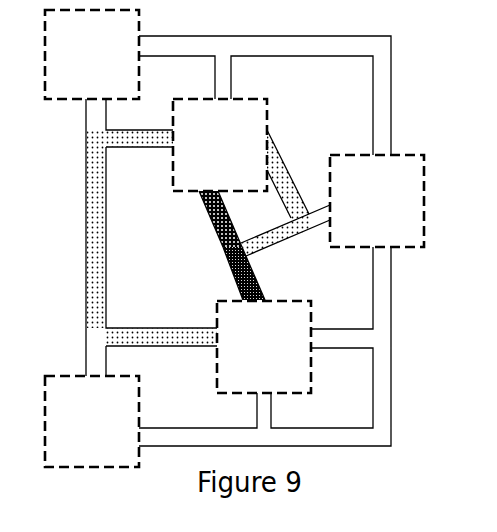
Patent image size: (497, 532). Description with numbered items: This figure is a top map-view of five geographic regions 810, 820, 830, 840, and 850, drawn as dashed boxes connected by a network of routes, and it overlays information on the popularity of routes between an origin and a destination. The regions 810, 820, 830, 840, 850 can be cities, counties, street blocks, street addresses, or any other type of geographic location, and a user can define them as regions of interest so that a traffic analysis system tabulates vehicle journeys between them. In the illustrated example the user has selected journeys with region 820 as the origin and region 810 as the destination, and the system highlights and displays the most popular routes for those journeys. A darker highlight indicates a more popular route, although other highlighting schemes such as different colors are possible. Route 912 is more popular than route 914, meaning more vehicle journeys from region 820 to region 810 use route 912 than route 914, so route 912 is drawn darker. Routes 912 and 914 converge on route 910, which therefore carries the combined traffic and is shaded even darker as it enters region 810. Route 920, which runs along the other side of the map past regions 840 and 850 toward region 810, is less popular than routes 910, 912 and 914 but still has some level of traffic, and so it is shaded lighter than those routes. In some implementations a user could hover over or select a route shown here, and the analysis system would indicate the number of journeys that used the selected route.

The geographic region 810 is at (264, 347).
The geographic region 820 is at (220, 145).
The geographic region 830 is at (377, 201).
The geographic region 840 is at (92, 54).
The geographic region 850 is at (92, 421).
The route 910 is at (232, 276).
The route 912 is at (207, 206).
The route 914 is at (283, 156).
The route 920 is at (105, 255).